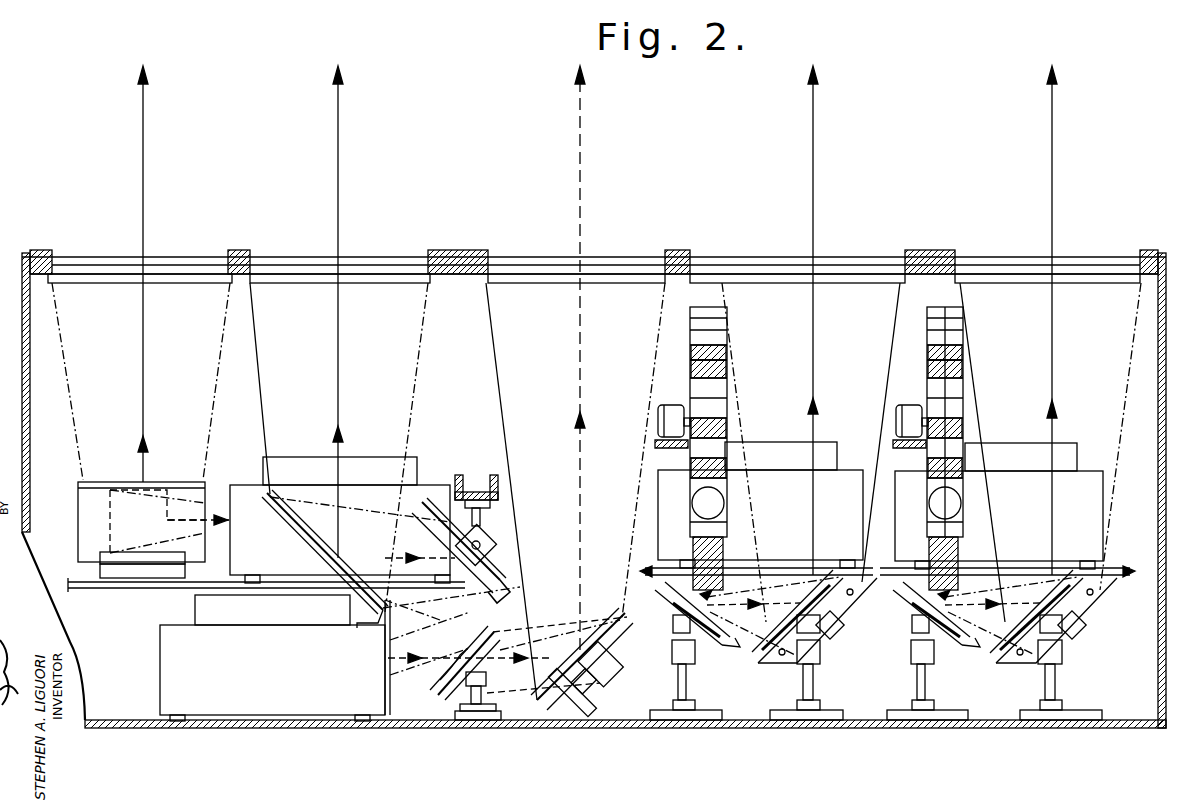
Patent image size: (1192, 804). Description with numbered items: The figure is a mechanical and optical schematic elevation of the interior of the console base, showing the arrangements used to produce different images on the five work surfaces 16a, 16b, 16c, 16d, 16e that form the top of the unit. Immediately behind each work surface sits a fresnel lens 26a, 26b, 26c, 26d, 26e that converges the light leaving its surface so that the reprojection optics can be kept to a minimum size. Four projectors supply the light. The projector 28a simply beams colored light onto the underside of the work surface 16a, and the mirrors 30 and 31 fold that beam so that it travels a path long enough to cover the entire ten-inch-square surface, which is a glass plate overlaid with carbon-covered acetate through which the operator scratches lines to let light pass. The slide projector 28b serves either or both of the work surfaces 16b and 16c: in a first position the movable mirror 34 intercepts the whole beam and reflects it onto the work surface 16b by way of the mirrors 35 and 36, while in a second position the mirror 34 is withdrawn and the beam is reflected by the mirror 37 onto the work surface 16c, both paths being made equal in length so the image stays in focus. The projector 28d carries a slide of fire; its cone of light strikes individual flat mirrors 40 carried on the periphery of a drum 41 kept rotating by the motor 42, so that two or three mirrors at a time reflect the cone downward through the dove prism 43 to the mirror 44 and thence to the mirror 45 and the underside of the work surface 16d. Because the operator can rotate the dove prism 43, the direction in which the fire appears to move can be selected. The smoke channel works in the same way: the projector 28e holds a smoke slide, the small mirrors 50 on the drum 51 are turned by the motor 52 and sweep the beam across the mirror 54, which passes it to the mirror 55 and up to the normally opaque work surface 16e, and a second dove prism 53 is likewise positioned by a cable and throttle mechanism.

The work surface 16a is at (118, 256).
The work surface 16b is at (308, 258).
The work surface 16c is at (546, 259).
The work surface 16d is at (786, 259).
The work surface 16e is at (1016, 259).
The fresnel lens 26a is at (118, 284).
The fresnel lens 26b is at (298, 284).
The fresnel lens 26c is at (550, 284).
The fresnel lens 26d is at (786, 284).
The fresnel lens 26e is at (1004, 284).
The projector 28a is at (272, 536).
The slide projector 28b is at (278, 678).
The projector 28d is at (798, 518).
The projector 28e is at (1036, 518).
The mirror 30 is at (118, 507).
The mirror 31 is at (92, 531).
The movable mirror 34 is at (440, 690).
The mirror 35 is at (497, 560).
The mirror 36 is at (315, 520).
The mirror 37 is at (612, 645).
The mirror 40 is at (718, 386).
The drum 41 is at (686, 372).
The motor 42 is at (656, 418).
The dove prism 43 is at (712, 552).
The mirror 44 is at (724, 636).
The mirror 45 is at (750, 647).
The mirror 50 is at (957, 380).
The drum 51 is at (922, 360).
The motor 52 is at (894, 416).
The dove prism 53 is at (948, 556).
The mirror 54 is at (963, 636).
The mirror 55 is at (992, 650).